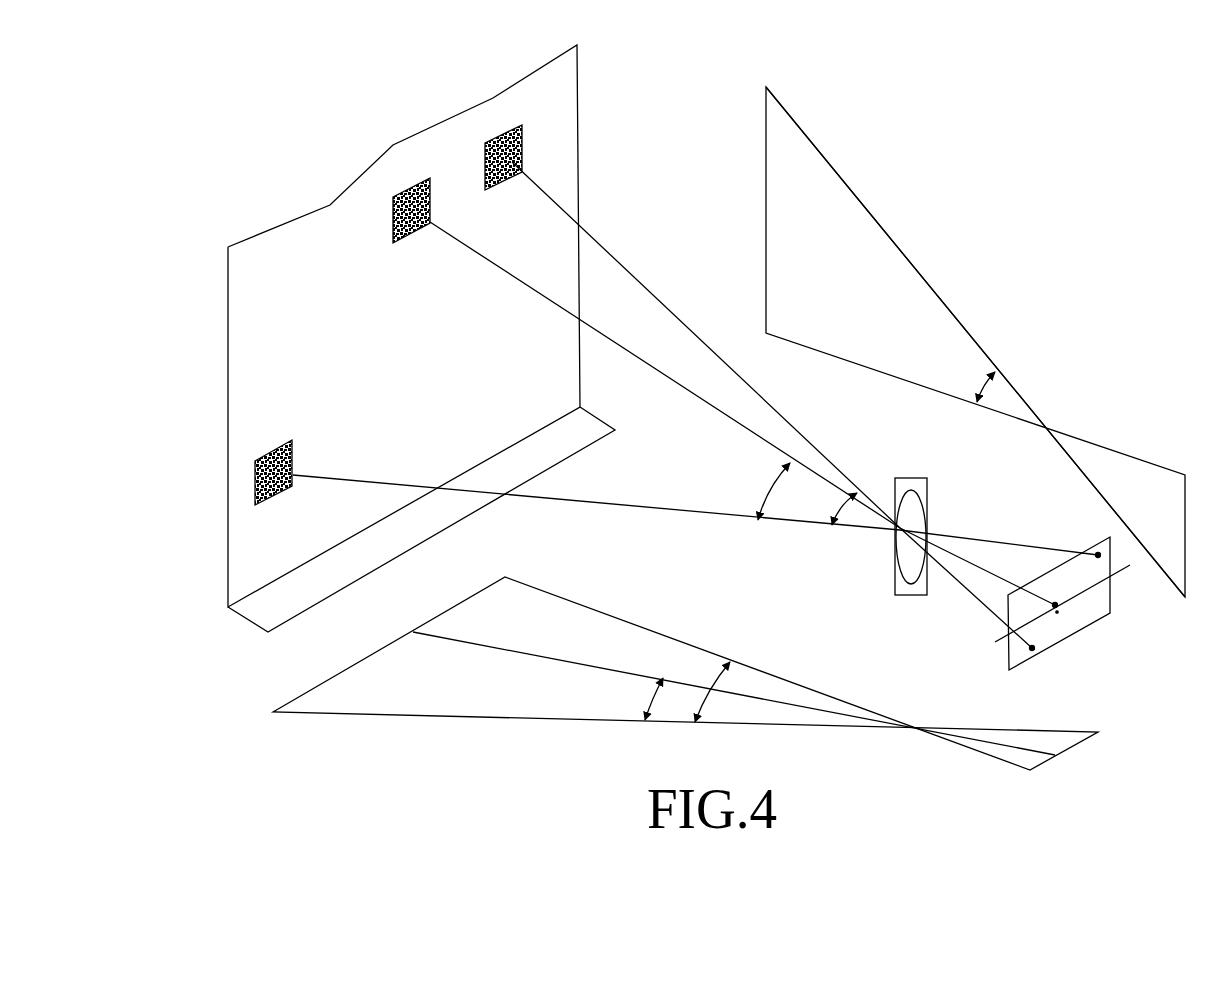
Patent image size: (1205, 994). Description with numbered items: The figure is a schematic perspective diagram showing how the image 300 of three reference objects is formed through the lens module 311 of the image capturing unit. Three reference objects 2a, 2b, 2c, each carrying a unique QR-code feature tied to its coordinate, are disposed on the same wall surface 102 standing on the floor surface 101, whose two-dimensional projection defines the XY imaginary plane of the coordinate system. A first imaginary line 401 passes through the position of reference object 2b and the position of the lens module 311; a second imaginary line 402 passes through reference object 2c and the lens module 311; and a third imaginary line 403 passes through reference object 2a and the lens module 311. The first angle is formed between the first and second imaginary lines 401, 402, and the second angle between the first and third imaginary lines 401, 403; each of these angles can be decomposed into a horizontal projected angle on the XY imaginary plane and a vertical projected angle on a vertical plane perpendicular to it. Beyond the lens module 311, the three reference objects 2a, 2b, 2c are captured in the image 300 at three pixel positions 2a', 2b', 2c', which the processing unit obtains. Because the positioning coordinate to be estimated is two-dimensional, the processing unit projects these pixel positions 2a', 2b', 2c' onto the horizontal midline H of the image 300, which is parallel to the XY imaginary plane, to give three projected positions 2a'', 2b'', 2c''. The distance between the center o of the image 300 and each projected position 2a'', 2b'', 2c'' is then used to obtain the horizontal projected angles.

The floor surface 101 is at (258, 617).
The wall surface 102 is at (315, 247).
The reference object 2a is at (409, 160).
The reference object 2b is at (223, 472).
The reference object 2c is at (501, 105).
The image 300 is at (1062, 565).
The lens module 311 is at (912, 477).
The first imaginary line 401 is at (695, 517).
The second imaginary line 402 is at (677, 315).
The third imaginary line 403 is at (665, 375).
The pixel position 2a' is at (1077, 670).
The pixel position 2b' is at (1085, 531).
The pixel position 2c' is at (1033, 690).
The projected position 2a'' is at (1010, 549).
The projected position 2b'' is at (1125, 639).
The projected position 2c'' is at (965, 630).
The horizontal midline H is at (1073, 602).
The center o is at (1068, 604).